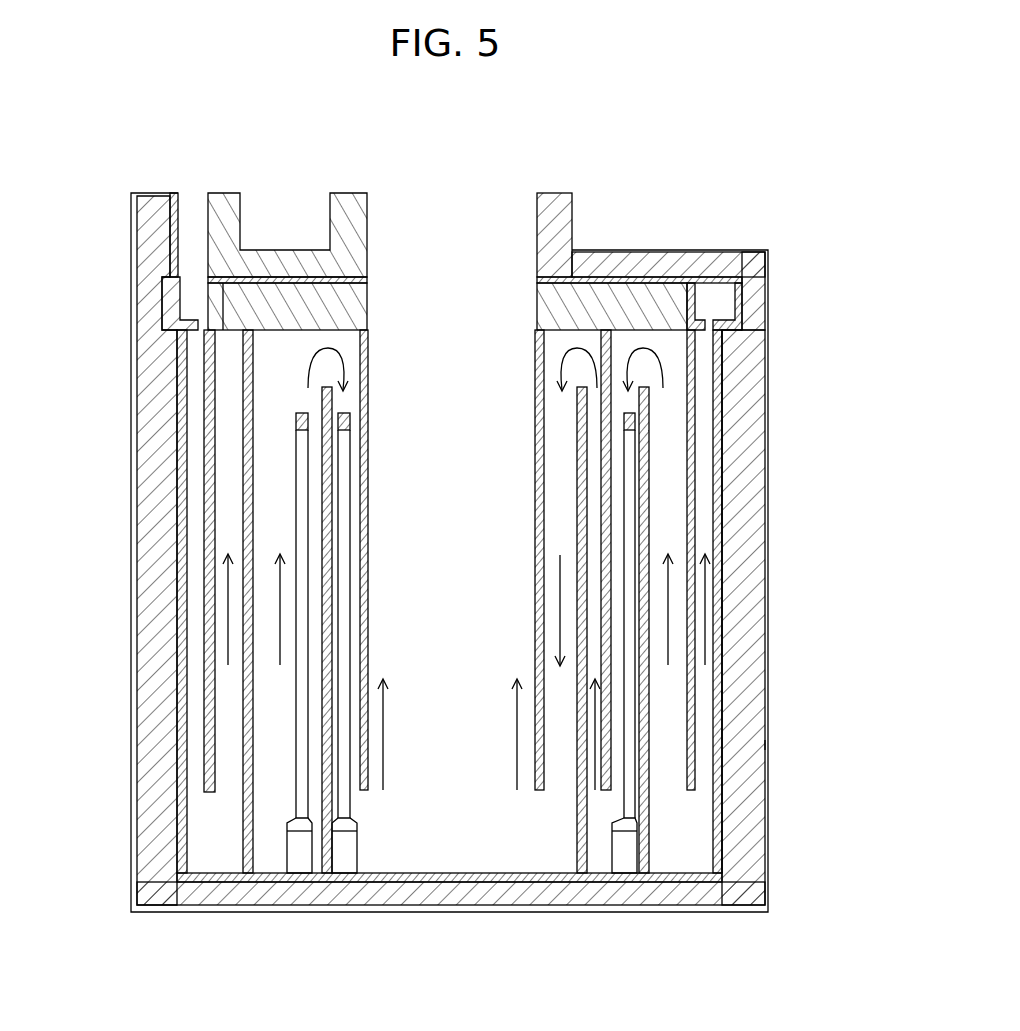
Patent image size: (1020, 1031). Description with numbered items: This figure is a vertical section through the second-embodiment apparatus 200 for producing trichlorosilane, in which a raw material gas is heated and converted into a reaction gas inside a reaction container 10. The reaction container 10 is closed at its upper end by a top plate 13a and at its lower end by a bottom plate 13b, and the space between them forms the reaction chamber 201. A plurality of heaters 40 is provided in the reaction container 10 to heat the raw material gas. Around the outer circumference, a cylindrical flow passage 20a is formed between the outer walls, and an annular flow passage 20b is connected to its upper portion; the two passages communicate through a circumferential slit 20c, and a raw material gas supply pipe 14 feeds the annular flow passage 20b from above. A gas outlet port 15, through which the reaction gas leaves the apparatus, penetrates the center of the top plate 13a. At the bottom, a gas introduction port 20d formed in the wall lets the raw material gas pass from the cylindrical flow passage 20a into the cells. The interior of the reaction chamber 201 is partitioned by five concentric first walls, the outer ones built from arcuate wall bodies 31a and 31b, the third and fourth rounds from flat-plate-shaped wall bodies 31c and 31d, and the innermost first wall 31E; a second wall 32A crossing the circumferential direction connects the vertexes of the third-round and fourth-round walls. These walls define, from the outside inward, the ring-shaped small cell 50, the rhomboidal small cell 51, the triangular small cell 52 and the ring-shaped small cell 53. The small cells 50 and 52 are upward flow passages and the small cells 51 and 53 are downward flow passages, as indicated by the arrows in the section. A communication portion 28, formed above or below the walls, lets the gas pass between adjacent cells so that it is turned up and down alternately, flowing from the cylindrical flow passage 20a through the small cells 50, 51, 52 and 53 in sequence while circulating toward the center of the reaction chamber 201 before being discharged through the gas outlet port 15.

The apparatus for producing trichlorosilane 200 is at (620, 158).
The reaction container 10 is at (133, 820).
The raw material gas supply pipe 14 is at (183, 262).
The gas outlet port 15 is at (535, 222).
The top plate 13a is at (735, 343).
The bottom plate 13b is at (246, 878).
The cylindrical flow passage 20a is at (728, 470).
The annular flow passage 20b is at (168, 302).
The slit 20c is at (178, 292).
The gas introduction port 20d is at (209, 838).
The reaction chamber 201 is at (233, 382).
The communication portion 28 is at (325, 343).
The arcuate wall body 31a is at (764, 745).
The arcuate wall body 31b is at (720, 690).
The flat-plate-shaped wall body 31c is at (243, 442).
The flat-plate-shaped wall body 31d is at (332, 466).
The first wall 31E is at (367, 555).
The second wall 32A is at (273, 470).
The heater 40 is at (360, 393).
The ring-shaped small cell 50 is at (207, 540).
The rhomboidal small cell 51 is at (610, 470).
The triangular small cell 52 is at (272, 712).
The ring-shaped small cell 53 is at (362, 640).